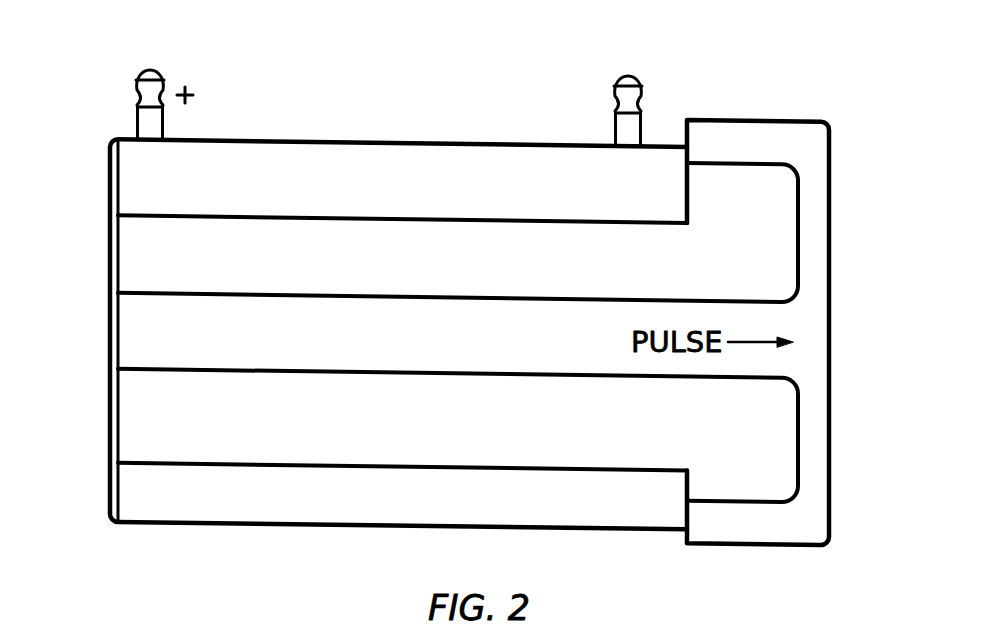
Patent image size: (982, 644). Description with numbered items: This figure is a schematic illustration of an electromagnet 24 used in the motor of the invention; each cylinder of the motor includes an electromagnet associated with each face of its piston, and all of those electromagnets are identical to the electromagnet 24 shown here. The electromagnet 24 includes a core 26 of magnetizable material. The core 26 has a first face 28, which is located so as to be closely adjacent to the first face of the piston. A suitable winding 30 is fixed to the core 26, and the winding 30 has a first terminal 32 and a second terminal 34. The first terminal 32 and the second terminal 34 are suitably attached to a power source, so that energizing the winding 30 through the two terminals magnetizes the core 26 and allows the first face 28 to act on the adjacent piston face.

The electromagnet 24 is at (533, 86).
The core 26 is at (128, 435).
The first face 28 is at (848, 318).
The winding 30 is at (235, 147).
The first terminal 32 is at (631, 77).
The second terminal 34 is at (152, 68).